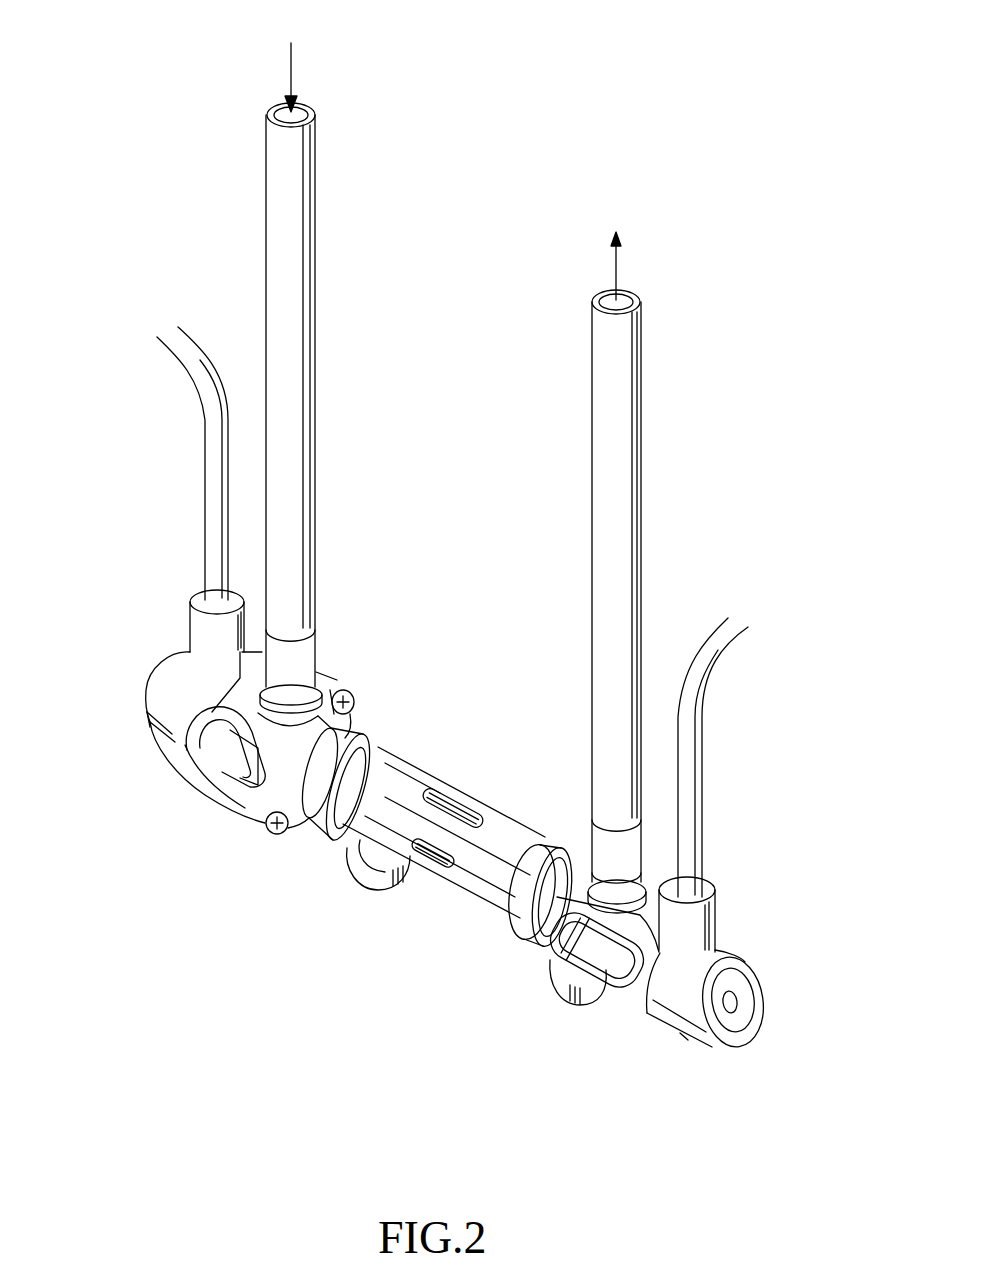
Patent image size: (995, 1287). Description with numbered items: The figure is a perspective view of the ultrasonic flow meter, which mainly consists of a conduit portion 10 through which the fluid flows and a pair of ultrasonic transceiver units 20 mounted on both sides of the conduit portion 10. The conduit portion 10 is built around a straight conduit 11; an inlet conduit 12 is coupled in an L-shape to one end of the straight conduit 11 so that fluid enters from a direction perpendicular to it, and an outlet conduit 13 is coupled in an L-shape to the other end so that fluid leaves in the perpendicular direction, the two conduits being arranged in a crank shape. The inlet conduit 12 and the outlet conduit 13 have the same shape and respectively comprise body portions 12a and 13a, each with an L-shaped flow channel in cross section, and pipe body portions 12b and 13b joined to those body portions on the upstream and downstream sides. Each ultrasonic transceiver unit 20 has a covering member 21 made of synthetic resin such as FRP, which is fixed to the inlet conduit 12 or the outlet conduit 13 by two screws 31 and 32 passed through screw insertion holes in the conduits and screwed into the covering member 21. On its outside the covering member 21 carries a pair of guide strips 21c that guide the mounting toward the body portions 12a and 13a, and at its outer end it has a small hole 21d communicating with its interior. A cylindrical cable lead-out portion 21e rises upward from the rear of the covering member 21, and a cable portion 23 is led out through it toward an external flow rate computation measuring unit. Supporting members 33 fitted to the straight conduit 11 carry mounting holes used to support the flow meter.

The conduit portion 10 is at (462, 808).
The straight conduit 11 is at (473, 860).
The inlet conduit 12 is at (317, 278).
The body portion 12a is at (240, 800).
The pipe body portion 12b is at (275, 225).
The outlet conduit 13 is at (642, 457).
The body portion 13a is at (562, 942).
The pipe body portion 13b is at (632, 367).
The ultrasonic transceiver unit 20 is at (150, 727).
The covering member 21 is at (167, 672).
The guide strip 21c is at (218, 743).
The small hole 21d is at (730, 1012).
The cable lead-out portion 21e is at (197, 603).
The cable portion 23 is at (213, 487).
The screw 31 is at (352, 697).
The screw 32 is at (277, 835).
The supporting member 33 is at (363, 870).